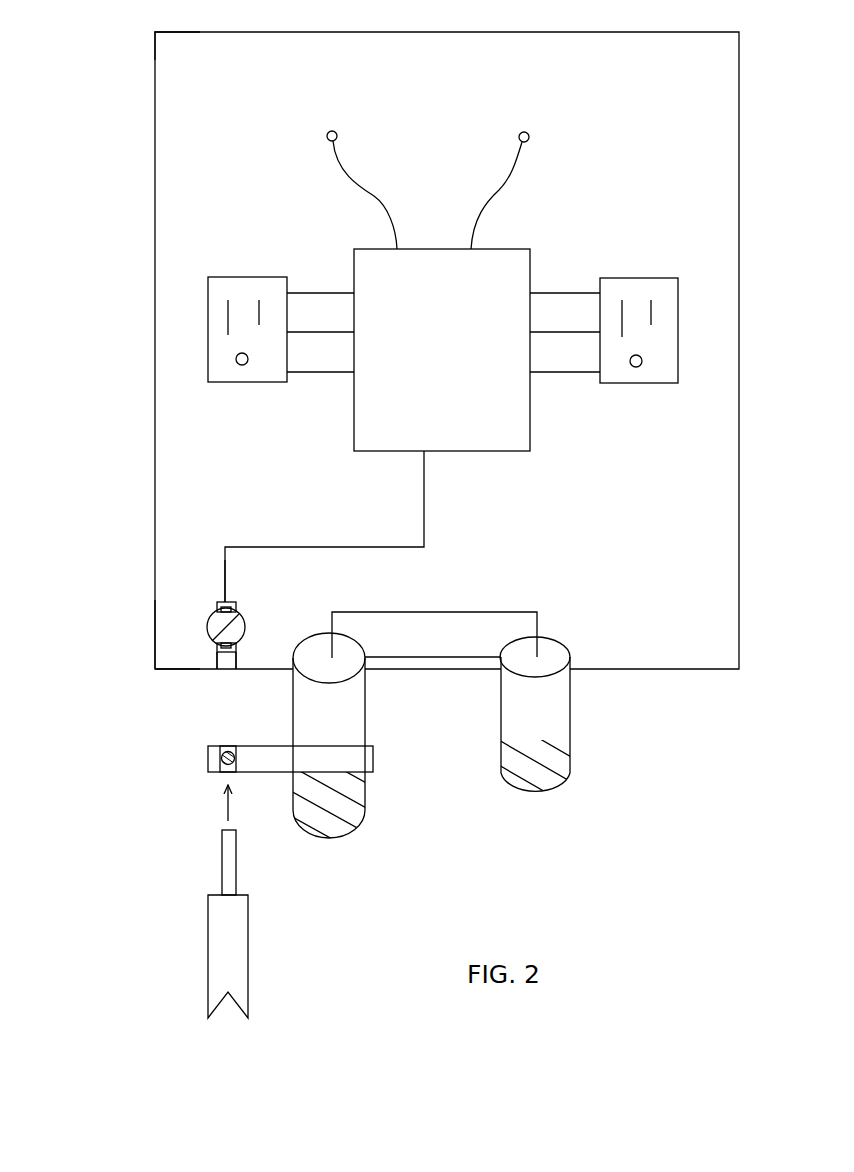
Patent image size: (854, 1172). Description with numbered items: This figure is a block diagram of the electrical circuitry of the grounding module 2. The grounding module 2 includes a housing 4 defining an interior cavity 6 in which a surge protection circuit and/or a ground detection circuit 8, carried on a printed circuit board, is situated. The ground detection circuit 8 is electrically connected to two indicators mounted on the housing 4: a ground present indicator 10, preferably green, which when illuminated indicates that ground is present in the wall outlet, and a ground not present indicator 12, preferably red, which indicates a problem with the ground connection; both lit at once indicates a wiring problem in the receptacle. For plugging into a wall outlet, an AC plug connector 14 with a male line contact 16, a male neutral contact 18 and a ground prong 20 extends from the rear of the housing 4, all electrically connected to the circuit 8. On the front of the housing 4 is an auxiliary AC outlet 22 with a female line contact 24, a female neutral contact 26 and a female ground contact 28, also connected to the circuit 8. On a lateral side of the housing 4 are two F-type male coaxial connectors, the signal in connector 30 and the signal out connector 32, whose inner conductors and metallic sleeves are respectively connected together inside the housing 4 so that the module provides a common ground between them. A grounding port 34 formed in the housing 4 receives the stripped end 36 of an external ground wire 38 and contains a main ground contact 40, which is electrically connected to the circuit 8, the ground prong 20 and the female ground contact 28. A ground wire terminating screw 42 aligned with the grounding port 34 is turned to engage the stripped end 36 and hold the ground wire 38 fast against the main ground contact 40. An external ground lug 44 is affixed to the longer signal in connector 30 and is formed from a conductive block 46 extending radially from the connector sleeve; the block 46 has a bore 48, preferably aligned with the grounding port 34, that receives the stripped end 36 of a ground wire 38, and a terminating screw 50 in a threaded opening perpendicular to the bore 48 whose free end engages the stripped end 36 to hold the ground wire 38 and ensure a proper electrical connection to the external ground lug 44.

The grounding module 2 is at (63, 369).
The housing 4 is at (155, 172).
The interior cavity 6 is at (172, 146).
The ground detection circuit 8 is at (530, 437).
The ground present indicator 10 is at (326, 138).
The ground not present indicator 12 is at (529, 137).
The AC plug connector 14 is at (664, 387).
The male line contact 16 is at (651, 308).
The male neutral contact 18 is at (617, 316).
The ground prong 20 is at (635, 368).
The auxiliary AC outlet 22 is at (275, 386).
The female line contact 24 is at (262, 310).
The female neutral contact 26 is at (226, 315).
The female ground contact 28 is at (240, 366).
The signal in coaxial connector 30 is at (365, 727).
The signal out coaxial connector 32 is at (570, 723).
The grounding port 34 is at (220, 669).
The stripped end 36 is at (221, 861).
The ground wire 38 is at (248, 940).
The main ground contact 40 is at (236, 649).
The ground wire terminating screw 42 is at (207, 626).
The external ground lug 44 is at (158, 765).
The block 46 is at (270, 772).
The bore 48 is at (226, 773).
The terminating screw 50 is at (226, 746).